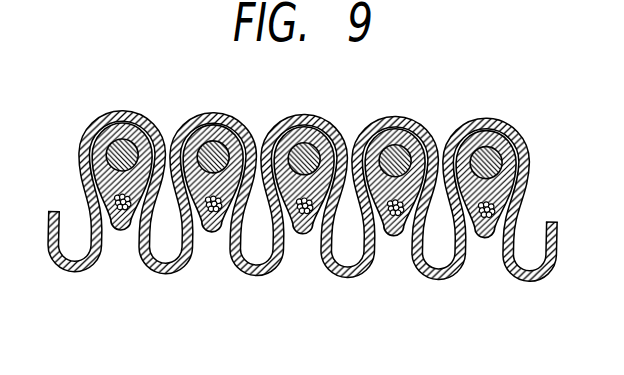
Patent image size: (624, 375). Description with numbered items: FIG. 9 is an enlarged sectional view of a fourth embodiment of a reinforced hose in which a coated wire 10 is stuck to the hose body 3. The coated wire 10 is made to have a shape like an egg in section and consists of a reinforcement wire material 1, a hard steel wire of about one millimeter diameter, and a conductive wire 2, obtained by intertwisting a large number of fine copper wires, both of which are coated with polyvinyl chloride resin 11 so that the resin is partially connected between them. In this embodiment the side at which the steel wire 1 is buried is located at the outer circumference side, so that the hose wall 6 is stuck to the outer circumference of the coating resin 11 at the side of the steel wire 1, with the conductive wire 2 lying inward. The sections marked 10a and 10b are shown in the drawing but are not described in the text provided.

The reinforcement wire material 1 is at (417, 140).
The conductive wire 2 is at (399, 210).
The hose body 3 is at (76, 119).
The hose wall 6 is at (387, 122).
The coated wire 10 is at (485, 262).
The first gap 10a is at (119, 250).
The second gap 10b is at (214, 256).
The polyvinyl chloride resin 11 is at (306, 226).